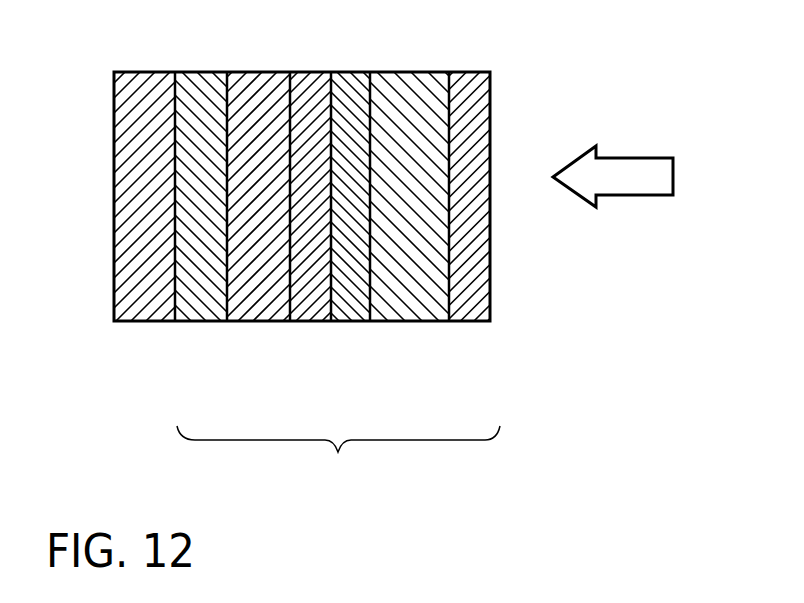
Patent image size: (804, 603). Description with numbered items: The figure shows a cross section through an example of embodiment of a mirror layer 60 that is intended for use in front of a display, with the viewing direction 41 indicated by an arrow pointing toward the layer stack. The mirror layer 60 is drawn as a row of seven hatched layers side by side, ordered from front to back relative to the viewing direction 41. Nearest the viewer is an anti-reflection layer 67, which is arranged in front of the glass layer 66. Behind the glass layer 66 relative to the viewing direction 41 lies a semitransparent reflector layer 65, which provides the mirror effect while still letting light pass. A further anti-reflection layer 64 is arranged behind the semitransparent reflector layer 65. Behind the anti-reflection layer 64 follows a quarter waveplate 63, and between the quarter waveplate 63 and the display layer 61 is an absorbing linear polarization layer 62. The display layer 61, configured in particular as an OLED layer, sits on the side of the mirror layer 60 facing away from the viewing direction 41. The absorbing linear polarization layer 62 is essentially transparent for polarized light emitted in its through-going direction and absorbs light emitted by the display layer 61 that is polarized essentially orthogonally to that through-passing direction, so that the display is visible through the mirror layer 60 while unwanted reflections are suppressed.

The mirror layer 60 is at (307, 257).
The display layer 61 is at (136, 137).
The absorbing linear polarization layer 62 is at (194, 287).
The quarter waveplate 63 is at (255, 138).
The anti-reflection layer 64 is at (312, 287).
The semitransparent reflector layer 65 is at (352, 138).
The glass layer 66 is at (412, 287).
The anti-reflection layer 67 is at (468, 139).
The viewing direction 41 is at (643, 175).